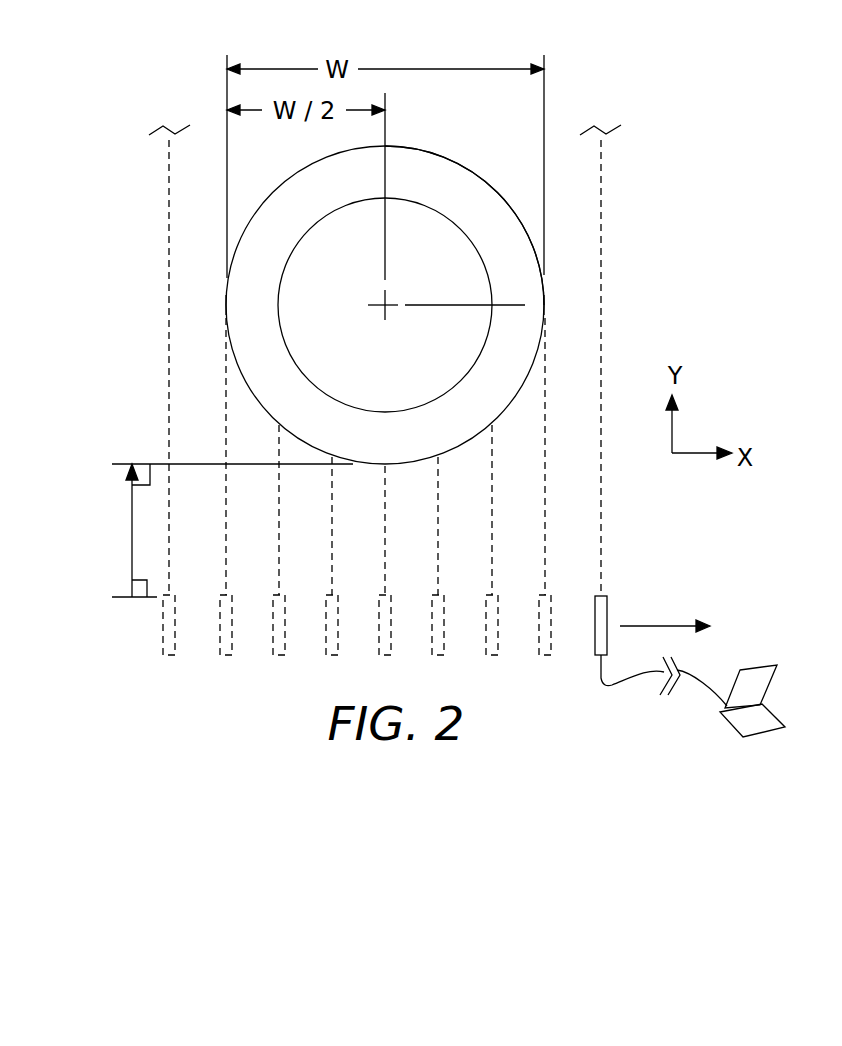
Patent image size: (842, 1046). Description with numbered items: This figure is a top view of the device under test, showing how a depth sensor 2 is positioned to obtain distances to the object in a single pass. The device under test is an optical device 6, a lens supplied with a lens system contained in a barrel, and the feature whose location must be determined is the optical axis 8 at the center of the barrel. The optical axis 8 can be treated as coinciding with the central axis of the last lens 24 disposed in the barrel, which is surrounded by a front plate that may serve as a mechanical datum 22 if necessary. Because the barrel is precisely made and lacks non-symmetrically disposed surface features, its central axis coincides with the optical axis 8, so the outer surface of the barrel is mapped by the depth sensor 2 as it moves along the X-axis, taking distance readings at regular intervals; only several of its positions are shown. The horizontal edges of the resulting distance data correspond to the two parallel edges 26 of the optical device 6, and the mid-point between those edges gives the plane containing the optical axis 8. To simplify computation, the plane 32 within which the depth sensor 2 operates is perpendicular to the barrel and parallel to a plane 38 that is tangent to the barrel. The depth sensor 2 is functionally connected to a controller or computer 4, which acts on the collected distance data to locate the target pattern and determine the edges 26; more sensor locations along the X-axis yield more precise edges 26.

The depth sensor 2 is at (595, 640).
The computer 4 is at (773, 710).
The optical device 6 is at (289, 176).
The optical axis 8 is at (392, 304).
The mechanical datum 22 is at (497, 208).
The last lens 24 is at (404, 213).
The parallel edges 26 is at (227, 316).
The plane 32 is at (121, 597).
The plane 38 is at (121, 464).